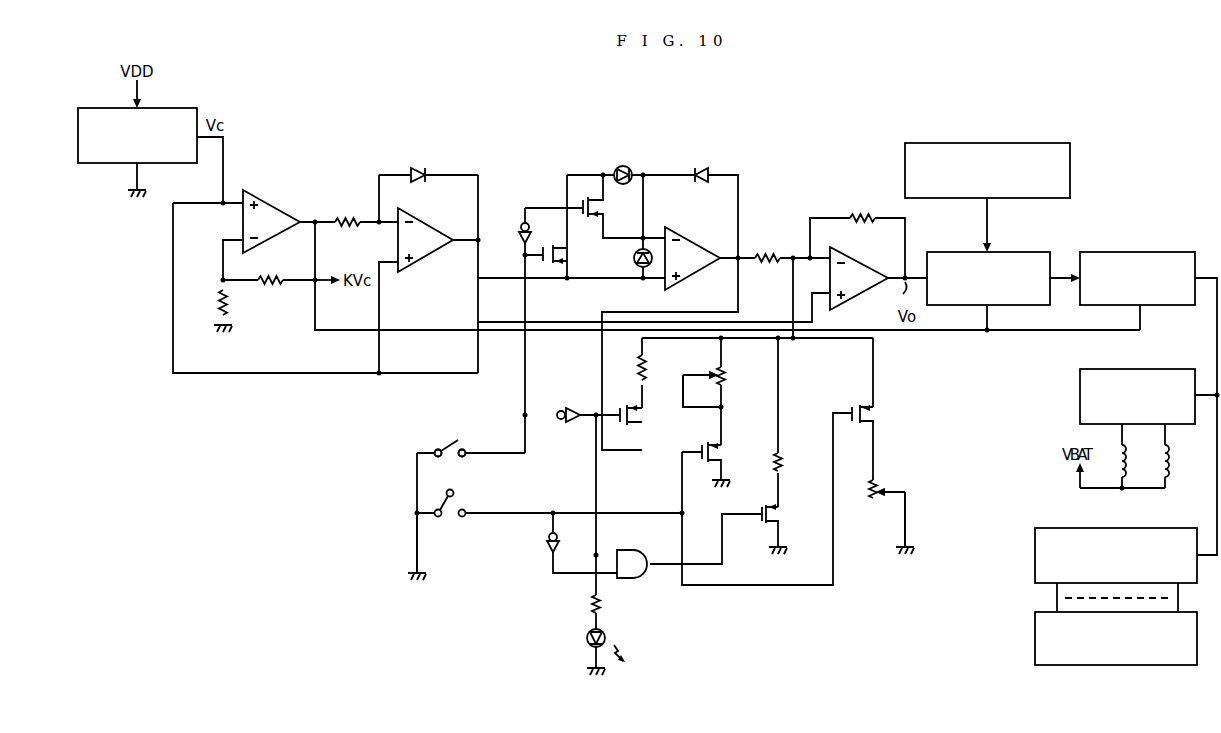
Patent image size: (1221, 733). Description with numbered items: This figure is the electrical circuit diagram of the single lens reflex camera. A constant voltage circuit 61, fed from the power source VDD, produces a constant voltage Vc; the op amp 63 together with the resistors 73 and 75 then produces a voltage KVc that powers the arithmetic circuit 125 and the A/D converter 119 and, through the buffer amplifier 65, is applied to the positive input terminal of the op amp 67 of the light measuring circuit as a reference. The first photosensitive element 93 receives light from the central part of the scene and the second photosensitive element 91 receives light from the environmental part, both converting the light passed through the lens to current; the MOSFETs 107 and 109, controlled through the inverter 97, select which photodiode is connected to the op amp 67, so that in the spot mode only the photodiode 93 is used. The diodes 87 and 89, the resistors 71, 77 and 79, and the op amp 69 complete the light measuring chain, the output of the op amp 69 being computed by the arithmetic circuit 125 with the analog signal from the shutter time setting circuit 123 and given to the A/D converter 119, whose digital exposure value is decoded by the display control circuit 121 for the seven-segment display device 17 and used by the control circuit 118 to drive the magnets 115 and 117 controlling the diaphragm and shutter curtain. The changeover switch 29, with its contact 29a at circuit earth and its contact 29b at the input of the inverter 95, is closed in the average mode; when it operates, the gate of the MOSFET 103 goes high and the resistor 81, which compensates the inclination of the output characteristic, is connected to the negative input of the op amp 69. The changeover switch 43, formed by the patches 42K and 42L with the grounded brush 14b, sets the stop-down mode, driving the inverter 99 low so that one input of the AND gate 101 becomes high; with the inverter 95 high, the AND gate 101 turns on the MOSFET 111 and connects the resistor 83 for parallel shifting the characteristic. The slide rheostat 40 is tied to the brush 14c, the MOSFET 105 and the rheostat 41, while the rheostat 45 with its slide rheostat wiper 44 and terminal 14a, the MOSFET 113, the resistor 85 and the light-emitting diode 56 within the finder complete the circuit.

The constant voltage circuit 61 is at (180, 108).
The operational amplifier 63 is at (270, 204).
The buffer amplifier 65 is at (422, 266).
The operational amplifier 67 is at (702, 242).
The operational amplifier 69 is at (870, 265).
The resistor 71 is at (348, 214).
The resistor 73 is at (271, 286).
The resistor 75 is at (232, 304).
The resistor 77 is at (768, 249).
The resistor 79 is at (862, 210).
The resistor 81 is at (638, 370).
The resistor 83 is at (783, 464).
The resistor 85 is at (602, 604).
The diode 87 is at (419, 168).
The diode 89 is at (700, 168).
The second photosensitive element 91 is at (629, 166).
The first photosensitive element 93 is at (634, 262).
The inverter 95 is at (572, 405).
The inverter 97 is at (518, 235).
The inverter 99 is at (546, 550).
The AND gate 101 is at (635, 550).
The MOSFET 103 is at (648, 425).
The MOSFET 105 is at (723, 447).
The MOSFET 107 is at (605, 209).
The MOSFET 109 is at (568, 257).
The MOSFET 111 is at (784, 518).
The MOSFET 113 is at (876, 408).
The magnet 115 is at (1118, 456).
The magnet 117 is at (1172, 456).
The control circuit 118 is at (1168, 369).
The A/D converter 119 is at (1172, 252).
The display control circuit 121 is at (1168, 528).
The shutter time setting circuit 123 is at (1042, 143).
The arithmetic circuit 125 is at (1020, 252).
The display device 17 is at (1035, 630).
The changeover switch 29 is at (456, 439).
The contact 29a is at (438, 449).
The contact 29b is at (466, 452).
The slide rheostat 40 is at (727, 386).
The rheostat 41 is at (731, 377).
The patch 42K is at (446, 491).
The patch 42L is at (462, 517).
The changeover switch 43 is at (454, 494).
The slide rheostat 44 is at (870, 505).
The rheostat 45 is at (878, 480).
The terminal 14a is at (908, 491).
The brush 14b is at (438, 517).
The brush 14c is at (690, 372).
The light-emitting diode 56 is at (608, 628).